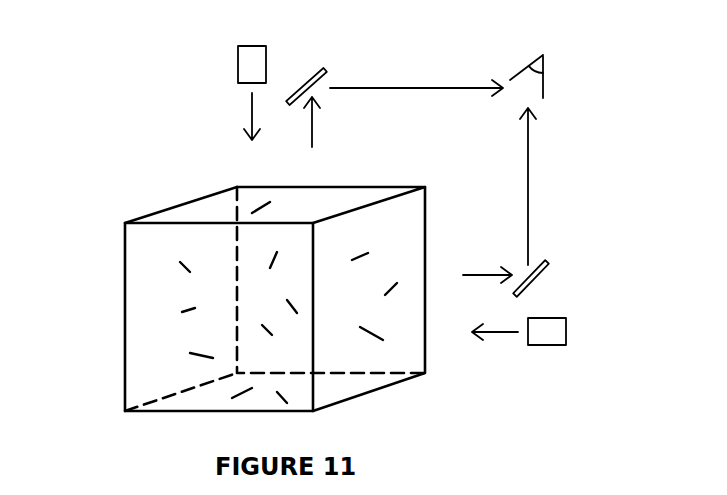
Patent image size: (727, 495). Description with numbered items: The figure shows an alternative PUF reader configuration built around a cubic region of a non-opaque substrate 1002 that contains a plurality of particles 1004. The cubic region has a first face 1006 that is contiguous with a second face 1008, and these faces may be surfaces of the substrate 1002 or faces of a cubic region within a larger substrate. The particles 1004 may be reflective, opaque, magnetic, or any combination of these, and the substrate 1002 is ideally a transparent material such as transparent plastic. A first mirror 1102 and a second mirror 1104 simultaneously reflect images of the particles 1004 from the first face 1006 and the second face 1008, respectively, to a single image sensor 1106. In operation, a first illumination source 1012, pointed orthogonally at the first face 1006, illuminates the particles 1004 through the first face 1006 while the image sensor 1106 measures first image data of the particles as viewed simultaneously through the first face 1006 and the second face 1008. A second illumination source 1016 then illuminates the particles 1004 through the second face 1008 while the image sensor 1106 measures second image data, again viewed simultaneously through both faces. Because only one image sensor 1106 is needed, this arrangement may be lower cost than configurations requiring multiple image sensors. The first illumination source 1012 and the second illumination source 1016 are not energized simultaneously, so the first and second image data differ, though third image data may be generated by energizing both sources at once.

The non-opaque substrate 1002 is at (265, 267).
The particles 1004 is at (178, 263).
The first face 1006 is at (212, 197).
The second face 1008 is at (410, 249).
The first illumination source 1012 is at (237, 63).
The second illumination source 1016 is at (592, 316).
The first mirror 1102 is at (317, 70).
The second mirror 1104 is at (538, 274).
The image sensor 1106 is at (540, 58).